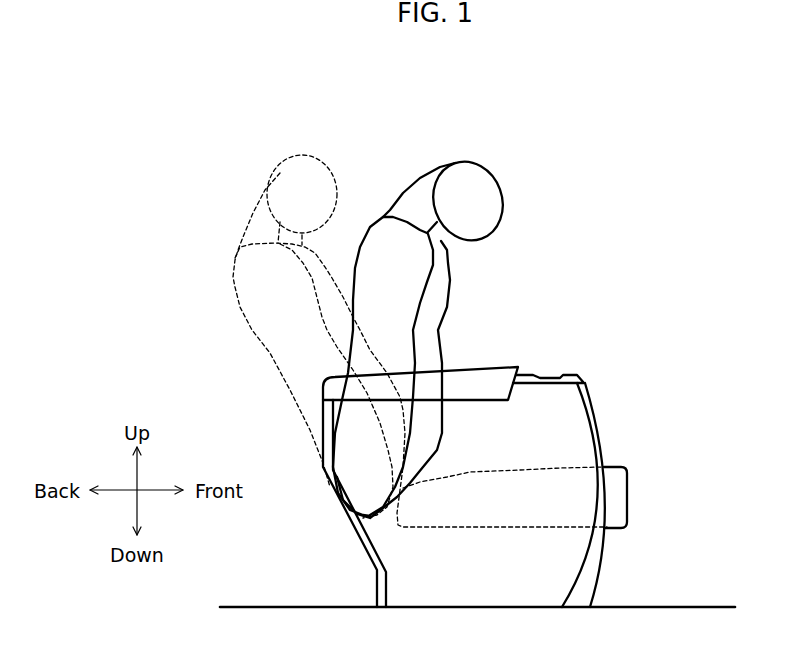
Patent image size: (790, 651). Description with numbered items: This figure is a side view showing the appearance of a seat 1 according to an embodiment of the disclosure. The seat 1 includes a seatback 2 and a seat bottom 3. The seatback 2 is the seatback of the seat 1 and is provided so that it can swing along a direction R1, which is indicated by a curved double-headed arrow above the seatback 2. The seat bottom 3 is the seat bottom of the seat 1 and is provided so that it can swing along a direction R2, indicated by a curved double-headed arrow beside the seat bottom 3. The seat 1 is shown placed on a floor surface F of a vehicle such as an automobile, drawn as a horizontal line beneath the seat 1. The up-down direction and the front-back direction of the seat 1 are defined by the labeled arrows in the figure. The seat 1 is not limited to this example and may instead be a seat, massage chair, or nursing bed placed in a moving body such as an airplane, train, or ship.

The seat 1 is at (599, 147).
The seatback 2 is at (437, 310).
The seat bottom 3 is at (627, 495).
The floor surface F is at (697, 607).
The direction R1 is at (418, 132).
The direction R2 is at (682, 462).